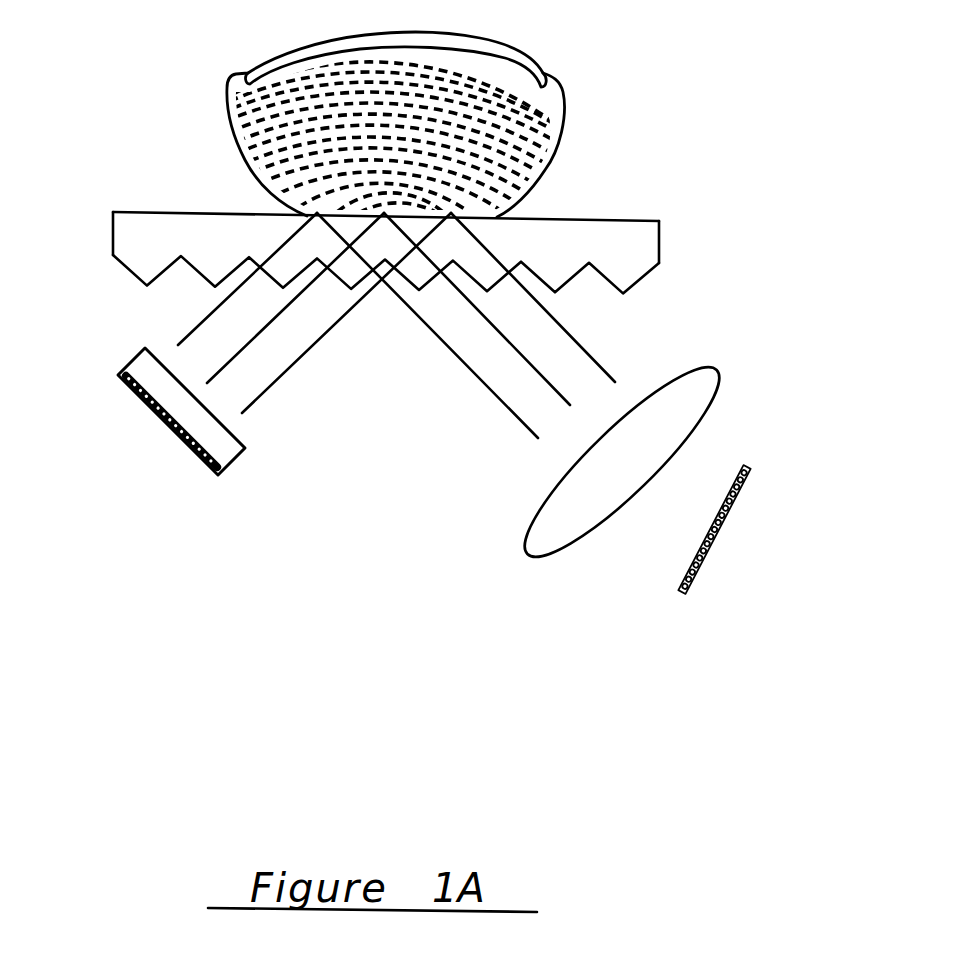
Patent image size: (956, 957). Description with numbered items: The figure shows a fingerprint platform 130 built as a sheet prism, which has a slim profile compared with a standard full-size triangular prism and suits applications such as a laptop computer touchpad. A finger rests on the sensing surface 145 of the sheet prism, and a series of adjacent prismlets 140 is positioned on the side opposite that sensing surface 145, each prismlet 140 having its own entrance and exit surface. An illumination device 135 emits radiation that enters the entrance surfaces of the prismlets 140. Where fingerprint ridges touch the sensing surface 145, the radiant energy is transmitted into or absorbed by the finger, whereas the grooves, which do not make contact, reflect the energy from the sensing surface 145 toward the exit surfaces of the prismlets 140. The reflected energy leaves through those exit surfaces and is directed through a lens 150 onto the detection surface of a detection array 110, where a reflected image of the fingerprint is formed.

The detection array 110 is at (682, 570).
The fingerprint platform 130 is at (385, 219).
The illumination device 135 is at (153, 440).
The prismlets 140 is at (180, 258).
The sensing surface 145 is at (144, 210).
The lens 150 is at (548, 537).